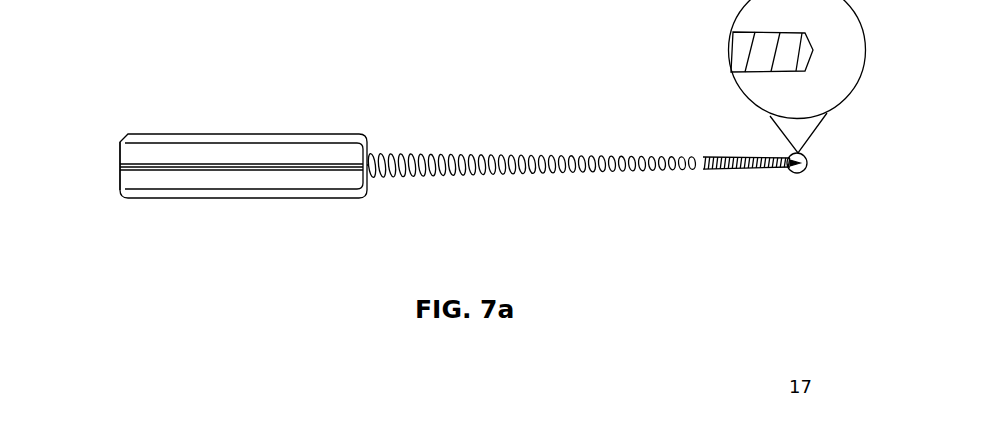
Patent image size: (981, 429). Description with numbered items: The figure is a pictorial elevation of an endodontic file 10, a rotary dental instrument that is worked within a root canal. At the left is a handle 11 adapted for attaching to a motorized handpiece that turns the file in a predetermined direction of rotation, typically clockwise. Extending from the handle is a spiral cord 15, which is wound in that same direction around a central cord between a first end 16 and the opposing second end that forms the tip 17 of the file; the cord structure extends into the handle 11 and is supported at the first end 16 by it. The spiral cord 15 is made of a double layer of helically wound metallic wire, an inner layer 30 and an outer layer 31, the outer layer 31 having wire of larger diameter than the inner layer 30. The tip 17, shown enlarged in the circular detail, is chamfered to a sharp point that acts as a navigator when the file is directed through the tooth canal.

The endodontic file 10 is at (458, 194).
The handle 11 is at (190, 198).
The spiral cord 15 is at (531, 200).
The first end 16 is at (103, 160).
The tip 17 is at (821, 162).
The inner layer 30 is at (715, 167).
The outer layer 31 is at (408, 175).